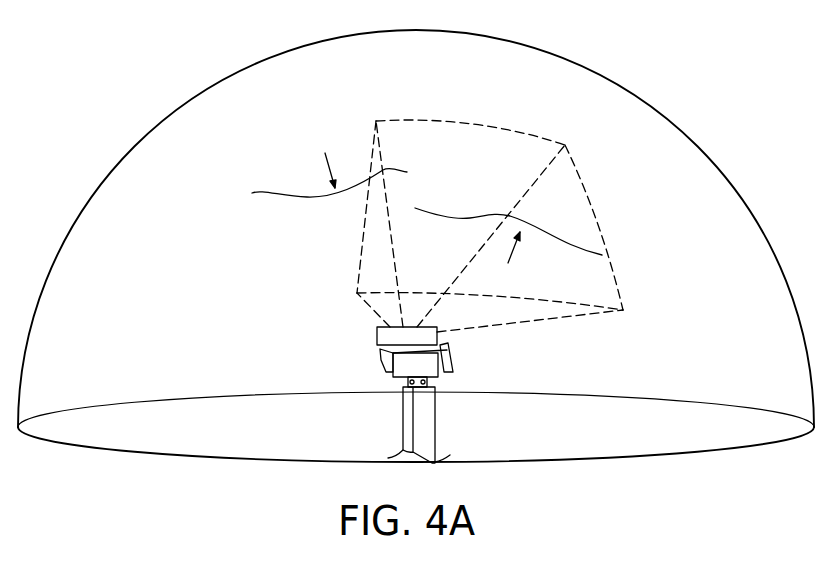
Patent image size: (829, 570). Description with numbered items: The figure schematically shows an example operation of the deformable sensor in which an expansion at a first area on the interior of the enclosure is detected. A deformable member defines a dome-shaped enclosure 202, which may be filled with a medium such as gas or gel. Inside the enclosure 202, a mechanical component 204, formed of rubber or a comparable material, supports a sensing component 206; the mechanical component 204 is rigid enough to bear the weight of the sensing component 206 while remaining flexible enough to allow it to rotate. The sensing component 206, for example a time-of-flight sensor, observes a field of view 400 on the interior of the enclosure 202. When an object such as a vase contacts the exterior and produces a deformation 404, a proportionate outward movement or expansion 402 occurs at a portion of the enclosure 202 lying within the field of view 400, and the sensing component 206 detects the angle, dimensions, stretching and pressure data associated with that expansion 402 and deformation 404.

The enclosure 202 is at (235, 73).
The mechanical component 204 is at (405, 425).
The sensing component 206 is at (453, 361).
The field of view 400 is at (462, 124).
The expansion 402 is at (468, 218).
The deformation 404 is at (263, 192).